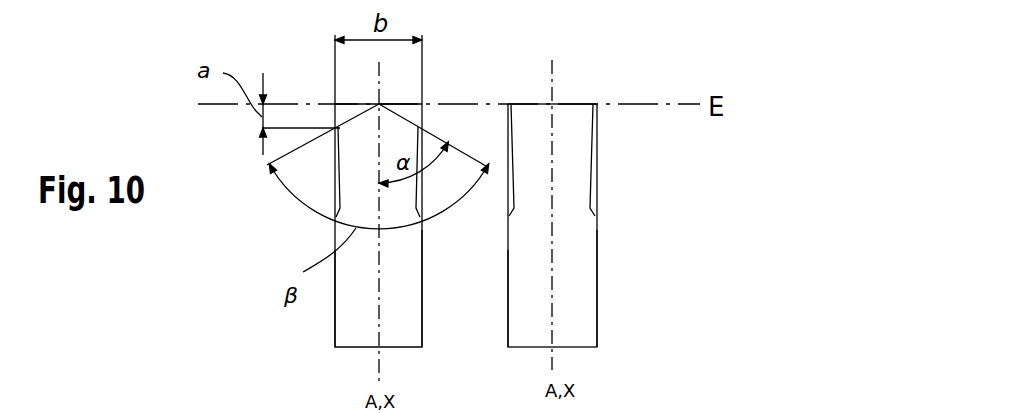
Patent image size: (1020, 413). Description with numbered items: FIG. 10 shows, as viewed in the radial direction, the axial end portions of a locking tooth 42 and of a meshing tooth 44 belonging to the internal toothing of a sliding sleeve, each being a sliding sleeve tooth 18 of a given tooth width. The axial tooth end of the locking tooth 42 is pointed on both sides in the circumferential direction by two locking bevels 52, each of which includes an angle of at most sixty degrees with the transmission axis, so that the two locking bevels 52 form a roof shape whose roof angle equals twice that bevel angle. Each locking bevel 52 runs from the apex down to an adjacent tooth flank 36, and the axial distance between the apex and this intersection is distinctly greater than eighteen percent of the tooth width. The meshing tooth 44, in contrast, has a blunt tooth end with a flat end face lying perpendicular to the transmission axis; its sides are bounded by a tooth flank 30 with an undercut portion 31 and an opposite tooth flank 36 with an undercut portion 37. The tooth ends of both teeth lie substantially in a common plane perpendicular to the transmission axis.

The sliding sleeve tooth 18 is at (306, 230).
The tooth flank 30 is at (333, 308).
The undercut portion 31 is at (514, 175).
The tooth flank 36 is at (423, 256).
The undercut portion 37 is at (590, 170).
The locking tooth 42 is at (405, 300).
The meshing tooth 44 is at (580, 300).
The locking bevel 52 is at (350, 118).